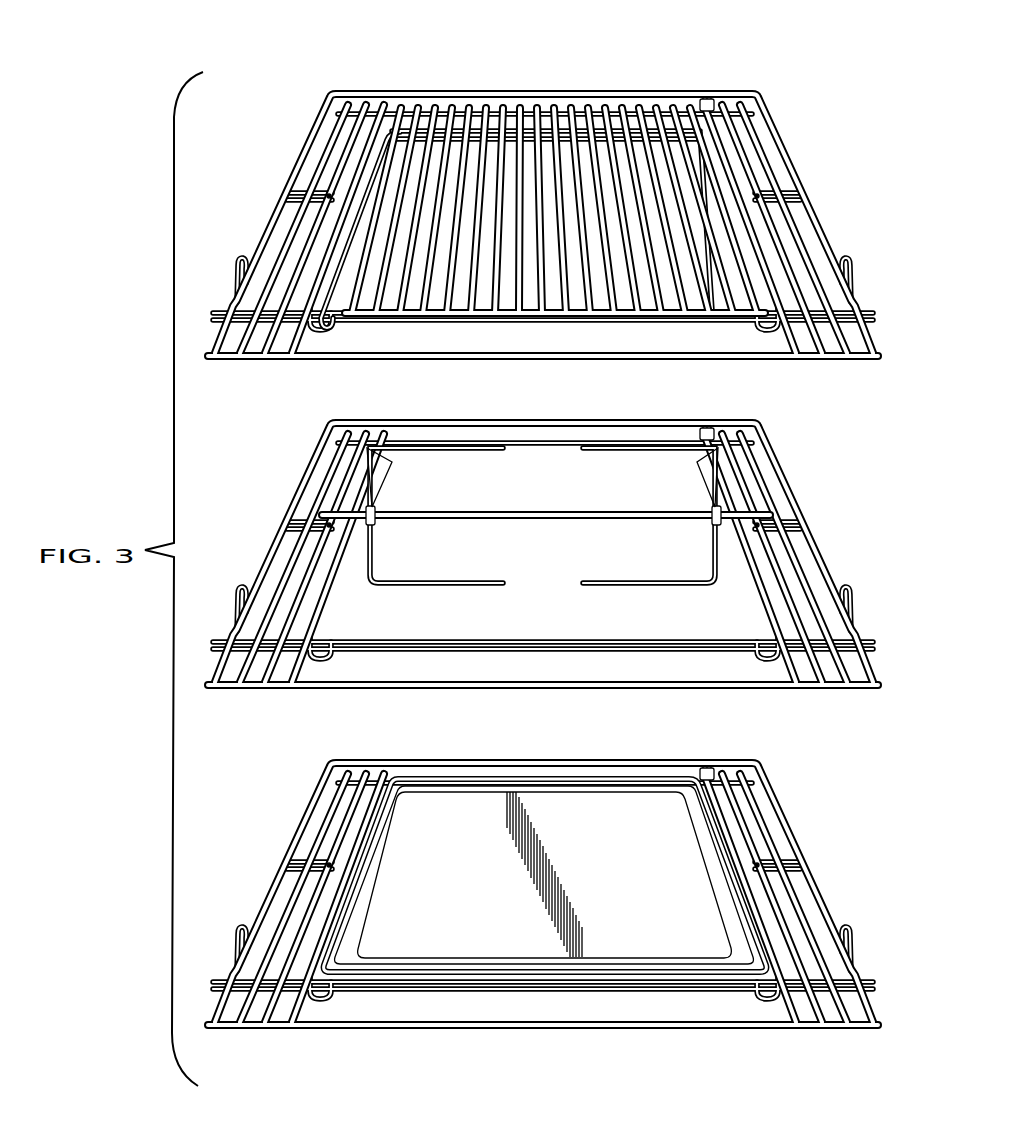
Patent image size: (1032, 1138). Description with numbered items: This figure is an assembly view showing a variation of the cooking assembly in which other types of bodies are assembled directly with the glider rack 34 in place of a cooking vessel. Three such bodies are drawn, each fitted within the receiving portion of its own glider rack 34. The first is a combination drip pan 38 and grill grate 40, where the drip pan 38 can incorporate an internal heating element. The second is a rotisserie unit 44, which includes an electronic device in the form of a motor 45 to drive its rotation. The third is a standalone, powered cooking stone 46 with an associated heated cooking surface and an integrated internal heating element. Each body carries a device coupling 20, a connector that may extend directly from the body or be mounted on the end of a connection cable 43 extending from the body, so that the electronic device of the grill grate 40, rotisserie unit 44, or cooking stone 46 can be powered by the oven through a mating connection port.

The device coupling 20 is at (713, 103).
The glider rack 34 is at (790, 162).
The drip pan 38 is at (598, 318).
The grill grate 40 is at (550, 160).
The connection cable 43 is at (717, 477).
The rotisserie unit 44 is at (633, 447).
The motor 45 is at (740, 512).
The cooking stone 46 is at (575, 810).